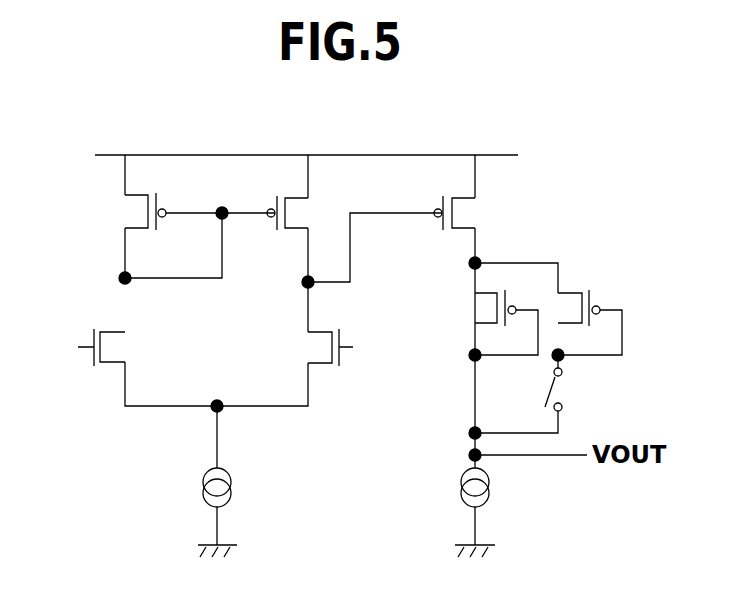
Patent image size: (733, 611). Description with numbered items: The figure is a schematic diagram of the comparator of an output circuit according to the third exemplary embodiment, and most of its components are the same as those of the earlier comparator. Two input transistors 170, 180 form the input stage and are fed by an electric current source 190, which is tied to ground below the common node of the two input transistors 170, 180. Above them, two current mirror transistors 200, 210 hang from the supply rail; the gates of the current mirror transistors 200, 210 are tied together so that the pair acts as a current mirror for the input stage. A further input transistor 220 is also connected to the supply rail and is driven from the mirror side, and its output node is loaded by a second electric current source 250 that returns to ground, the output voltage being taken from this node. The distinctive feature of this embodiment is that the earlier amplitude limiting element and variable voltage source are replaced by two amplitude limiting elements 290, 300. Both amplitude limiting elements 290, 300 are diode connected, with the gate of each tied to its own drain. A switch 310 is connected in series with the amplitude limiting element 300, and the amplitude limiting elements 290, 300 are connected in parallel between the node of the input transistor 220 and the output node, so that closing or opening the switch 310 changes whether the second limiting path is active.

The input transistor 170 is at (97, 365).
The input transistor 180 is at (333, 332).
The electric current source 190 is at (202, 496).
The current mirror transistor 200 is at (122, 213).
The current mirror transistor 210 is at (300, 213).
The input transistor 220 is at (480, 213).
The electric current source 250 is at (460, 495).
The amplitude limiting element 290 is at (478, 312).
The amplitude limiting element 300 is at (587, 293).
The switch 310 is at (563, 391).